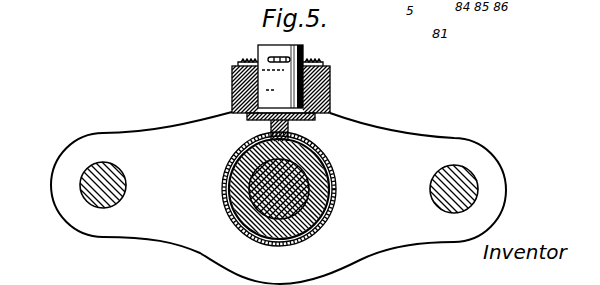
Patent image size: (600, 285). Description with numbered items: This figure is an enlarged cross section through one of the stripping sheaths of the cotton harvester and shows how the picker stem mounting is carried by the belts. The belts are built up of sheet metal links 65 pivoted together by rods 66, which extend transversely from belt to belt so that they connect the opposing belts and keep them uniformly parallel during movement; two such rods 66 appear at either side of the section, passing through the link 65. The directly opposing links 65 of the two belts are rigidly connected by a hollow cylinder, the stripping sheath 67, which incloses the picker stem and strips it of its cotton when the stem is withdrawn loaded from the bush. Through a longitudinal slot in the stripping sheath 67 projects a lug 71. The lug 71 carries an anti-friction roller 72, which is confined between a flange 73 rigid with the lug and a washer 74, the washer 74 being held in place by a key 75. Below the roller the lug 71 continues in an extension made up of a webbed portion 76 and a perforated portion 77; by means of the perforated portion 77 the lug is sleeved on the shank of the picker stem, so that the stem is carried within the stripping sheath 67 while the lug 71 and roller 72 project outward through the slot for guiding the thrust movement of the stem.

The sheet metal link 65 is at (386, 130).
The rod 66 is at (100, 163).
The stripping sheath 67 is at (317, 145).
The lug 71 is at (305, 48).
The anti-friction roller 72 is at (330, 70).
The flange 73 is at (232, 112).
The washer 74 is at (243, 62).
The key 75 is at (268, 58).
The webbed portion 76 is at (270, 127).
The perforated portion 77 is at (235, 170).